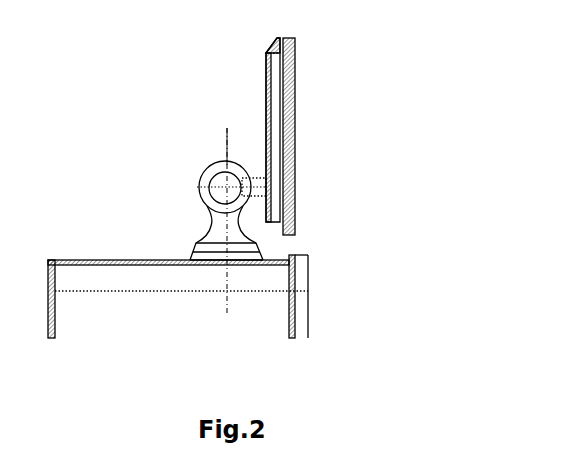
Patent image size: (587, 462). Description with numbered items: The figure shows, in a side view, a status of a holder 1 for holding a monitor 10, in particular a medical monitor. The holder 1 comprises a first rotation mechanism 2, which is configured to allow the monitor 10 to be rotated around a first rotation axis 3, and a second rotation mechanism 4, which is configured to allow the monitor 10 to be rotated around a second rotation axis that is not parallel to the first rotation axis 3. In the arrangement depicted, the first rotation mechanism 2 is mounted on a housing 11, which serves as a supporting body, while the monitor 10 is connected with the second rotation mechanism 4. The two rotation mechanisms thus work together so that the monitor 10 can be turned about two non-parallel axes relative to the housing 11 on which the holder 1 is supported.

The holder 1 is at (205, 198).
The first rotation mechanism 2 is at (216, 237).
The first rotation axis 3 is at (220, 137).
The second rotation mechanism 4 is at (218, 182).
The monitor 10 is at (278, 107).
The housing 11 is at (267, 320).